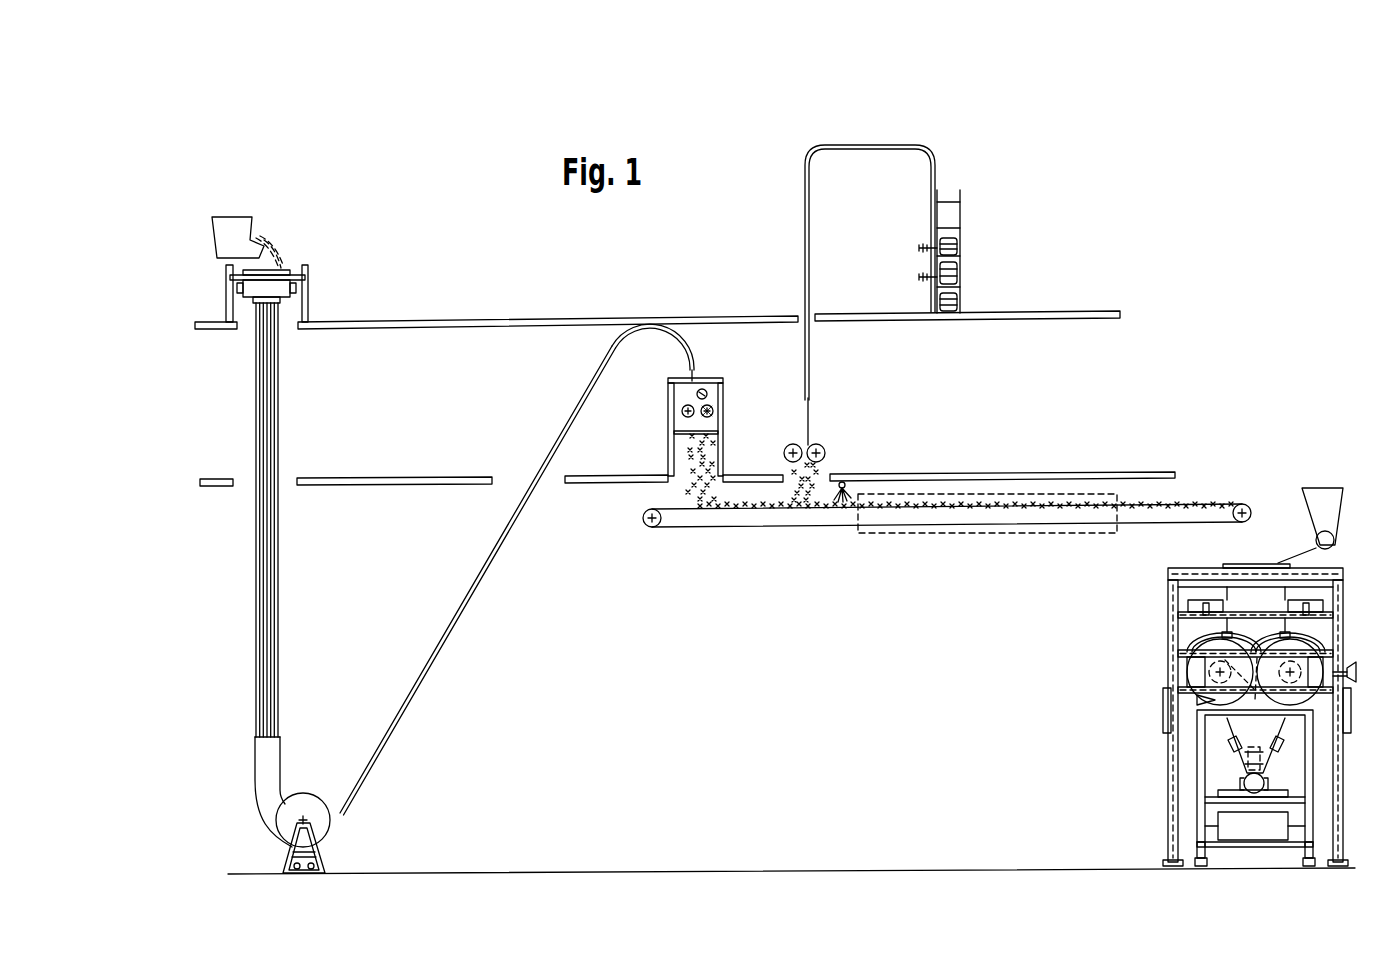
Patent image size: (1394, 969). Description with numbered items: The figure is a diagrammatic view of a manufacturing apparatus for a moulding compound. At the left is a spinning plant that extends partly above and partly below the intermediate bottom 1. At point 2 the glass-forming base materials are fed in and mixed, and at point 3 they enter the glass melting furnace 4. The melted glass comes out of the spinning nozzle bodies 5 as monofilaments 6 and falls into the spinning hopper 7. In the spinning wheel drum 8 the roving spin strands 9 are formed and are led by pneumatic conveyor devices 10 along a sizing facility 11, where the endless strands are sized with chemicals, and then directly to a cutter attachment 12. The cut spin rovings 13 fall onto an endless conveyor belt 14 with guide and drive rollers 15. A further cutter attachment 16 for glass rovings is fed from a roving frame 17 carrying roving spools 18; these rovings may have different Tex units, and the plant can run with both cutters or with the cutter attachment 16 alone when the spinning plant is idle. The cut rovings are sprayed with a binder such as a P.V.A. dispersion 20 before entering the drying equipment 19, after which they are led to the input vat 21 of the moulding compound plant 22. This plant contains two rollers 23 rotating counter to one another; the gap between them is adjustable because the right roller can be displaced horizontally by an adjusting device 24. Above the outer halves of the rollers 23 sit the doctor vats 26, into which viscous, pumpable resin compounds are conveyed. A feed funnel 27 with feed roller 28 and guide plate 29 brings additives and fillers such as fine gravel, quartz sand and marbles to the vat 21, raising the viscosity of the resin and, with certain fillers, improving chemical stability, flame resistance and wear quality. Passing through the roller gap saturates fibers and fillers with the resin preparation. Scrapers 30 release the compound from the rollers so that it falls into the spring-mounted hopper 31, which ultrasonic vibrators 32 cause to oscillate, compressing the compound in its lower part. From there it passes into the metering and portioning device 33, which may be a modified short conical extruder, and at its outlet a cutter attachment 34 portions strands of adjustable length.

The intermediate bottom 1 is at (455, 321).
The feed and mixing point 2 is at (248, 226).
The furnace entry point 3 is at (284, 256).
The glass melting furnace 4 is at (308, 281).
The spinning nozzle bodies 5 is at (293, 298).
The monofilaments 6 is at (279, 366).
The spinning hopper 7 is at (277, 748).
The spinning wheel drum 8 is at (318, 811).
The roving spin strands 9 is at (704, 372).
The pneumatic conveyor devices 10 is at (383, 746).
The sizing facility 11 is at (708, 394).
The cutter attachment 12 is at (714, 412).
The cut spin rovings 13 is at (698, 440).
The endless conveyor belt 14 is at (760, 528).
The guide and drive rollers 15 is at (652, 528).
The cutter attachment for glass rovings 16 is at (820, 446).
The roving frame 17 is at (960, 272).
The roving spools 18 is at (958, 303).
The drying equipment 19 is at (905, 535).
The P.V.A. dispersion 20 is at (846, 486).
The input vat 21 is at (1240, 590).
The moulding compound plant 22 is at (1168, 575).
The rollers 23 is at (1196, 672).
The adjusting device 24 is at (1352, 678).
The doctor vats 26 is at (1195, 632).
The feed funnel 27 is at (1340, 493).
The feed roller 28 is at (1335, 540).
The guide plate 29 is at (1312, 556).
The scrapers 30 is at (1197, 700).
The spring-mounted hopper 31 is at (1268, 722).
The ultrasonic vibrators 32 is at (1282, 748).
The metering and portioning device 33 is at (1264, 783).
The cutter attachment 34 is at (1278, 797).